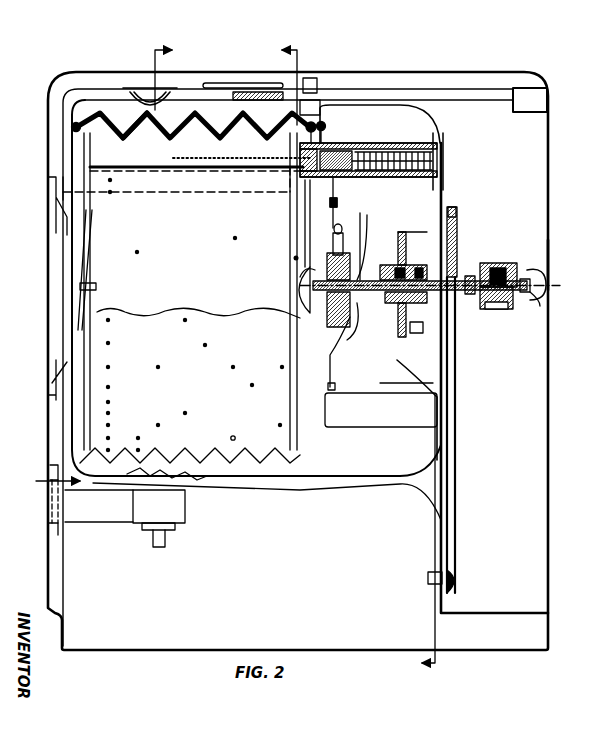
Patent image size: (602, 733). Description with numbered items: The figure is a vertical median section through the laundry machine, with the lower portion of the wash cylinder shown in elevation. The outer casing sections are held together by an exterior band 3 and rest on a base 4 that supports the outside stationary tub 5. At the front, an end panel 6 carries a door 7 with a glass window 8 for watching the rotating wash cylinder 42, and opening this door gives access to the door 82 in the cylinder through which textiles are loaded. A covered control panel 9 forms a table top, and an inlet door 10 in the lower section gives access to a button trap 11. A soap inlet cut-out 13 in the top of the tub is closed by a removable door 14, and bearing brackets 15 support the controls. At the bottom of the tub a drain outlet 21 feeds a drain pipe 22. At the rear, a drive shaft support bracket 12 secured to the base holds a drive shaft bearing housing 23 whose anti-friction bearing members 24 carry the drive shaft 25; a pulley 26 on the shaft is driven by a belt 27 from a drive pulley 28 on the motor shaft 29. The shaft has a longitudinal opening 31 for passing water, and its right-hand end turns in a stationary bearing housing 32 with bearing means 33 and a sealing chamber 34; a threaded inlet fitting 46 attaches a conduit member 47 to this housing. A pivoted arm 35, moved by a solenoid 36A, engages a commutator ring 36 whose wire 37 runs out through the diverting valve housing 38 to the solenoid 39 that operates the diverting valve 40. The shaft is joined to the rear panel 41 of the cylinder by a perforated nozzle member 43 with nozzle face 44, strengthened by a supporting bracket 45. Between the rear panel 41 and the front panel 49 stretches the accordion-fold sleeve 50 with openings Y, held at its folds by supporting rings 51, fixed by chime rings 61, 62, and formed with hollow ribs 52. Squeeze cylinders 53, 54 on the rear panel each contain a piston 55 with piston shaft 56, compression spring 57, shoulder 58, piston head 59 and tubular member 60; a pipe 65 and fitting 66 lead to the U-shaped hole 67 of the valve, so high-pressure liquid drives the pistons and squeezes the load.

The exterior band 3 is at (346, 357).
The base 4 is at (209, 283).
The stationary tub 5 is at (427, 470).
The end panel 6 is at (47, 108).
The door 7 is at (50, 202).
The glass panel or window 8 is at (52, 240).
The covered control panel 9 is at (89, 87).
The inlet door 10 is at (48, 513).
The button trap 11 is at (92, 522).
The drive shaft support bracket 12 is at (444, 203).
The soap inlet cut-out 13 is at (133, 84).
The removable door 14 is at (183, 85).
The bearing brackets 15 is at (230, 96).
The drain outlet 21 is at (176, 505).
The drain pipe 22 is at (167, 540).
The drive shaft bearing housing 23 is at (408, 263).
The anti-friction bearing members 24 is at (458, 252).
The drive shaft 25 is at (492, 266).
The pulley 26 is at (457, 215).
The belt 27 is at (458, 470).
The drive pulley 28 is at (458, 570).
The motor shaft 29 is at (427, 578).
The longitudinal opening 31 is at (474, 305).
The stationary bearing housing 32 is at (508, 263).
The bearing means 33 is at (535, 262).
The sealing chamber 34 is at (545, 272).
The commutator-energizing pivoted arm 35 is at (418, 333).
The commutator ring 36 is at (470, 276).
The solenoid 36A is at (400, 350).
The electrical conducting wire 37 is at (357, 320).
The diverting valve housing 38 is at (313, 313).
The solenoid 39 is at (333, 245).
The diverting valve 40 is at (325, 305).
The rear panel 41 is at (305, 240).
The rotating wash cylinder 42 is at (190, 298).
The perforated nozzle member 43 is at (300, 262).
The nozzle face 44 is at (310, 292).
The supporting bracket 45 is at (340, 198).
The threaded inlet fitting 46 is at (532, 293).
The conduit member 47 is at (531, 286).
The front panel 49 is at (84, 153).
The flexible accordion-fold sleeve 50 is at (183, 135).
The supporting ring 51 is at (130, 137).
The hollow rubber ribs 52 is at (160, 173).
The squeeze cylinder 53 is at (378, 152).
The squeeze cylinder 54 is at (367, 425).
The piston 55 is at (350, 148).
The piston shaft 56 is at (312, 123).
The coiled compression spring 57 is at (407, 153).
The enlarged shoulder 58 is at (340, 180).
The piston head 59 is at (340, 146).
The tubular member 60 is at (250, 157).
The chime ring 61 is at (75, 123).
The chime ring 62 is at (322, 123).
The pipe 65 is at (305, 213).
The pipe fitting 66 is at (343, 255).
The U-shaped hole 67 is at (348, 265).
The wash cylinder door 82 is at (80, 273).
The openings Y is at (190, 413).